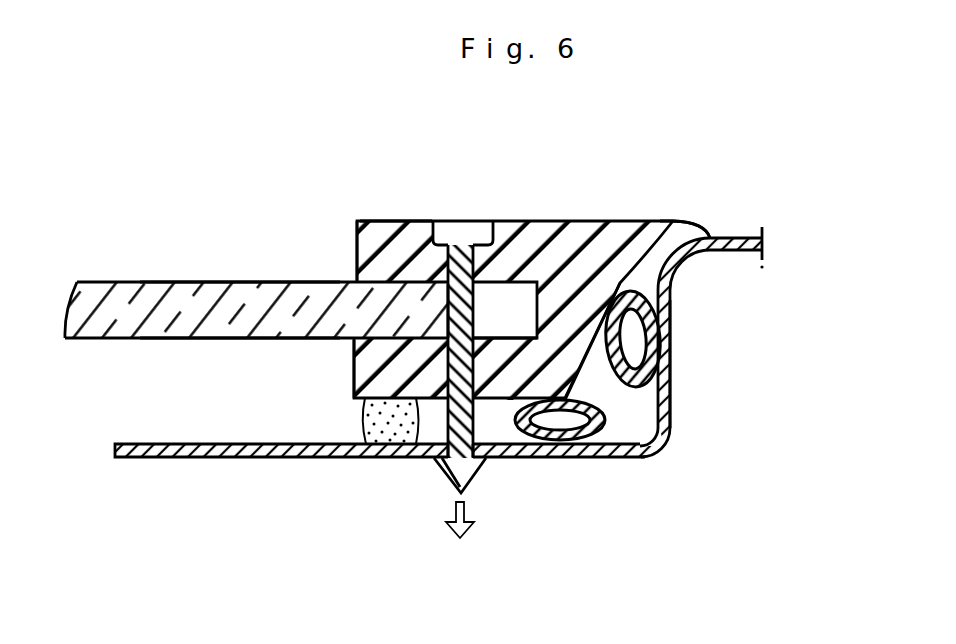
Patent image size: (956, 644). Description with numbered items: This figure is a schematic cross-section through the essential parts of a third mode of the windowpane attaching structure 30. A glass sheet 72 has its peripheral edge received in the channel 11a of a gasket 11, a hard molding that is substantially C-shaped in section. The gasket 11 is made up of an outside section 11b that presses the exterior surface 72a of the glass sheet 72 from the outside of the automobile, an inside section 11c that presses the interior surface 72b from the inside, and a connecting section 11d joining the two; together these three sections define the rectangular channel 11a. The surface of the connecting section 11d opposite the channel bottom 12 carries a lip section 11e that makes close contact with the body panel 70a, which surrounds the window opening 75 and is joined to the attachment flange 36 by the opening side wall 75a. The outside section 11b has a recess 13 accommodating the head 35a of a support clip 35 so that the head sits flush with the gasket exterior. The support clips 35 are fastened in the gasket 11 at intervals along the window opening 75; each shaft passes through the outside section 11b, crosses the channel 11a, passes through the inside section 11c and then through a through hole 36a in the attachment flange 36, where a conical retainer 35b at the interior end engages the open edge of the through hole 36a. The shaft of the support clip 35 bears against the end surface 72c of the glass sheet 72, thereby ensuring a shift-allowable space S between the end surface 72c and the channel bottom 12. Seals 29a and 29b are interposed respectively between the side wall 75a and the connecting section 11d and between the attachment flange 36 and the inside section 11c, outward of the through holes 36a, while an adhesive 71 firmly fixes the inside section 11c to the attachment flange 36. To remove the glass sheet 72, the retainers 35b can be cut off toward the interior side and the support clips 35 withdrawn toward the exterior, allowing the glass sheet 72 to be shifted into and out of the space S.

The windowpane attaching structure 30 is at (255, 180).
The gasket 11 is at (386, 196).
The channel 11a is at (357, 284).
The outside section 11b is at (400, 232).
The inside section 11c is at (366, 392).
The connecting section 11d is at (605, 292).
The lip section 11e is at (676, 221).
The channel bottom 12 is at (540, 262).
The recess 13 is at (475, 225).
The support clip 35 is at (500, 237).
The head 35a is at (457, 228).
The retainer 35b is at (445, 478).
The attachment flange 36 is at (228, 458).
The through hole 36a is at (470, 462).
The body panel 70a is at (737, 240).
The adhesive 71 is at (381, 458).
The glass sheet 72 is at (176, 272).
The exterior surface 72a is at (238, 282).
The interior surface 72b is at (188, 340).
The end surface 72c is at (443, 347).
The window opening 75 is at (630, 422).
The side wall 75a is at (668, 407).
The seal 29a is at (655, 328).
The seal 29b is at (596, 458).
The shift-allowable space S is at (504, 318).